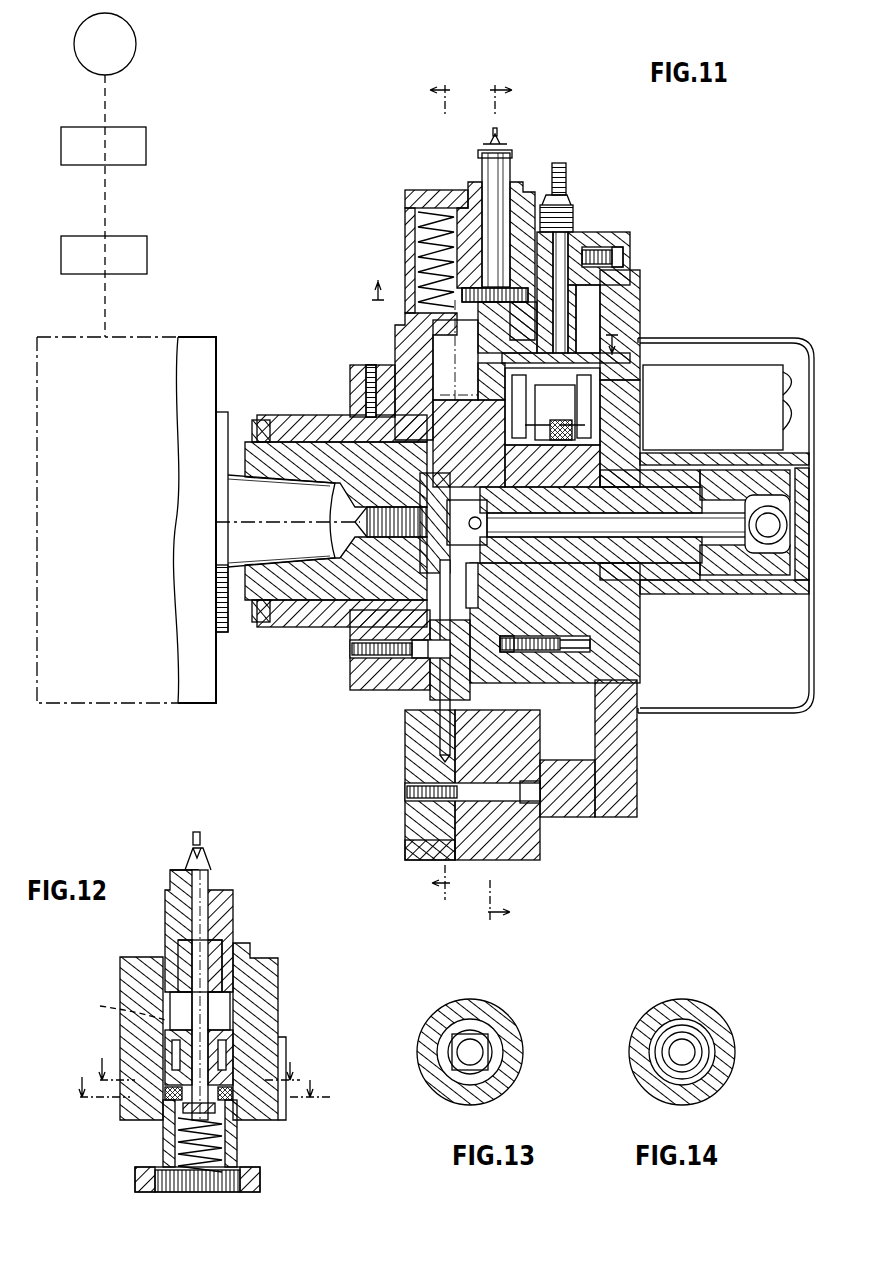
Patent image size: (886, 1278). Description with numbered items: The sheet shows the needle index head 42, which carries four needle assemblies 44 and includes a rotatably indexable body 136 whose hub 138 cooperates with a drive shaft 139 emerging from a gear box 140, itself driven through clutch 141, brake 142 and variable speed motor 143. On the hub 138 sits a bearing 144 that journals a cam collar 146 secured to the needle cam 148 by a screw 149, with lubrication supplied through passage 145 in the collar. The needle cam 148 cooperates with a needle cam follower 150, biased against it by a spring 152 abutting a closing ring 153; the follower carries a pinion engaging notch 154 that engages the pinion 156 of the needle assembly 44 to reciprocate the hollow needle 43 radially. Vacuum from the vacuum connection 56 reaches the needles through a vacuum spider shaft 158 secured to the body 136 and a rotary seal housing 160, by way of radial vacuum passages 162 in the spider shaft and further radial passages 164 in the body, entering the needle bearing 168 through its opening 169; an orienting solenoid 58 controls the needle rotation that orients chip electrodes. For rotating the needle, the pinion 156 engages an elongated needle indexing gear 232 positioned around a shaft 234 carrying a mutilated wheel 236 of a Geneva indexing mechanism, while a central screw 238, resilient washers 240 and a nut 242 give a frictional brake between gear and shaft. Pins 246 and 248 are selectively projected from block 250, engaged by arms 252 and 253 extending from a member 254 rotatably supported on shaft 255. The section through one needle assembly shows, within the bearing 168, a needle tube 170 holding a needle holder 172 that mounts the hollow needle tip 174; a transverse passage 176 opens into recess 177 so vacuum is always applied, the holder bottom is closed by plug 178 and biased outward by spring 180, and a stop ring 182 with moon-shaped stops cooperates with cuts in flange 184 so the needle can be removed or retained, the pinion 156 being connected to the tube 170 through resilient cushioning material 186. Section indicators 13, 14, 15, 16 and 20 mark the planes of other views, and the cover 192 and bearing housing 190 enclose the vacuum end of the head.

In FIG. 11, the variable speed motor 143 is at (134, 58).
In FIG. 11, the brake 142 is at (148, 146).
In FIG. 11, the clutch 141 is at (147, 256).
In FIG. 11, the gear box 140 is at (216, 373).
In FIG. 11, the drive shaft 139 is at (305, 529).
In FIG. 11, the hub 138 is at (247, 605).
In FIG. 11, the bearing 144 is at (325, 628).
In FIG. 11, the passage 145 is at (365, 392).
In FIG. 11, the cam collar 146 is at (368, 690).
In FIG. 11, the needle cam 148 is at (438, 700).
In FIG. 11, the screw 149 is at (358, 650).
In FIG. 11, the needle cam follower 150 is at (425, 336).
In FIG. 11, the spring 152 is at (412, 232).
In FIG. 11, the closing ring 153 is at (428, 190).
In FIG. 11, the pinion engaging notch 154 is at (450, 340).
In FIG. 11, the pinion 156 is at (510, 296).
In FIG. 12, the pinion 156 is at (262, 1178).
In FIG. 11, the vacuum spider shaft 158 is at (503, 503).
In FIG. 11, the rotary seal housing 160 is at (800, 582).
In FIG. 11, the radial vacuum passages 162 is at (482, 608).
In FIG. 11, the radial passages 164 is at (448, 700).
In FIG. 11, the rotatably indexable body 136 is at (408, 760).
In FIG. 12, the rotatably indexable body 136 is at (286, 1120).
In FIG. 11, the bearing housing 190 is at (706, 590).
In FIG. 11, the cover 192 is at (756, 340).
In FIG. 11, the orienting solenoids 58 is at (730, 376).
In FIG. 11, the vacuum connection 56 is at (768, 540).
In FIG. 11, the needle index head 42 is at (655, 193).
In FIG. 11, the hollow needle 43 is at (491, 131).
In FIG. 12, the hollow needle 43 is at (203, 840).
In FIG. 11, the needle assembly 44 is at (522, 152).
In FIG. 12, the needle assembly 44 is at (274, 897).
In FIG. 11, the needle indexing gear 232 is at (505, 365).
In FIG. 11, the shaft 234 is at (612, 272).
In FIG. 11, the mutilated wheel 236 is at (610, 335).
In FIG. 11, the central screw 238 is at (558, 252).
In FIG. 11, the resilient washers 240 is at (574, 210).
In FIG. 11, the nut 242 is at (570, 190).
In FIG. 11, the pin 246 is at (518, 410).
In FIG. 11, the pin 248 is at (600, 410).
In FIG. 11, the block 250 is at (632, 378).
In FIG. 11, the arm 252 is at (548, 422).
In FIG. 11, the arm 253 is at (598, 428).
In FIG. 11, the member 254 is at (600, 446).
In FIG. 11, the shaft 255 is at (552, 442).
In FIG. 11, the section line 15- 15 is at (437, 483).
In FIG. 11, the section line 16- 16 is at (495, 312).
In FIG. 11, the section line 20- 20 is at (514, 493).
In FIG. 12, the section line 13- 13 is at (201, 1061).
In FIG. 12, the section line 14- 14 is at (200, 1081).
In FIG. 12, the needle bearing 168 is at (250, 952).
In FIG. 13, the needle bearing 168 is at (432, 1024).
In FIG. 14, the needle bearing 168 is at (650, 1026).
In FIG. 12, the opening 169 is at (123, 1008).
In FIG. 12, the needle tube 170 is at (233, 916).
In FIG. 12, the needle holder 172 is at (170, 950).
In FIG. 12, the hollow needle tip 174 is at (212, 870).
In FIG. 12, the transverse passage 176 is at (200, 1011).
In FIG. 12, the recess 177 is at (238, 1022).
In FIG. 12, the plug 178 is at (165, 1118).
In FIG. 12, the spring 180 is at (237, 1148).
In FIG. 12, the stop ring 182 is at (232, 1090).
In FIG. 13, the stop ring 182 is at (500, 1048).
In FIG. 12, the flange 184 is at (225, 1112).
In FIG. 14, the flange 184 is at (700, 1080).
In FIG. 12, the resilient cushioning material 186 is at (237, 1192).